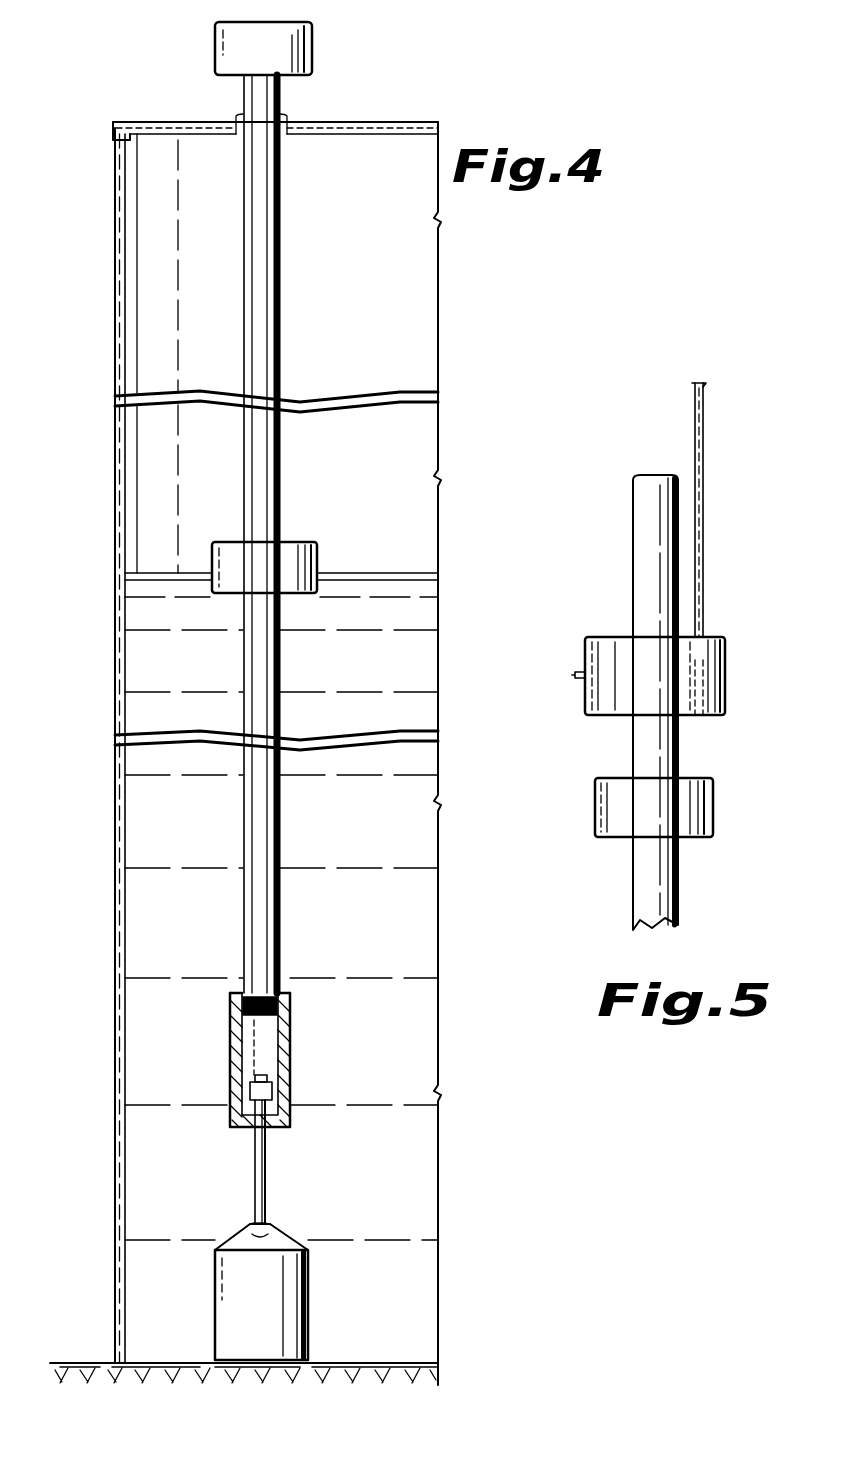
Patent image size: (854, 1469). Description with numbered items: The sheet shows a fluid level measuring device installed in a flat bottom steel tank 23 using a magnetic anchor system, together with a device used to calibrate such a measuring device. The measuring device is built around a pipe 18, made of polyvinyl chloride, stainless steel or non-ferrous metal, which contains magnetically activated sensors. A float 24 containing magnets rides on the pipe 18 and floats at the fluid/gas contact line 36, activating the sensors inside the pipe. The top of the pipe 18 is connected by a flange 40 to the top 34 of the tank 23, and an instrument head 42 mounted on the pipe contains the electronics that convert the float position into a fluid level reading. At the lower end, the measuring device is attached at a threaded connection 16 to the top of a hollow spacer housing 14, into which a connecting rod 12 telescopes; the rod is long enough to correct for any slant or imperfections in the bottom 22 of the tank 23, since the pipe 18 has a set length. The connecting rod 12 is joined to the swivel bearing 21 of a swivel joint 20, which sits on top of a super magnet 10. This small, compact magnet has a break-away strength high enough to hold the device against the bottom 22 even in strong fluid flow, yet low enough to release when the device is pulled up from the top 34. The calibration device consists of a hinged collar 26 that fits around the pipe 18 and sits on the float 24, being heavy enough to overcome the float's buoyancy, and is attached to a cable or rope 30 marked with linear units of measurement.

In FIG. 4, the super magnet 10 is at (308, 1325).
In FIG. 4, the connecting rod 12 is at (266, 1176).
In FIG. 4, the spacer housing 14 is at (290, 1080).
In FIG. 4, the threaded connection 16 is at (290, 1008).
In FIG. 4, the pipe 18 is at (282, 300).
In FIG. 5, the pipe 18 is at (648, 525).
In FIG. 4, the swivel joint 20 is at (292, 1248).
In FIG. 4, the swivel bearing 21 is at (275, 1215).
In FIG. 4, the bottom 22 is at (385, 1365).
In FIG. 4, the tank 23 is at (113, 282).
In FIG. 4, the float 24 is at (317, 551).
In FIG. 5, the float 24 is at (713, 818).
In FIG. 5, the hinged collar 26 is at (725, 700).
In FIG. 5, the cable or rope 30 is at (703, 475).
In FIG. 4, the top 34 is at (360, 125).
In FIG. 4, the fluid/gas contact line 36 is at (383, 573).
In FIG. 4, the flange 40 is at (242, 130).
In FIG. 4, the instrument head 42 is at (312, 50).